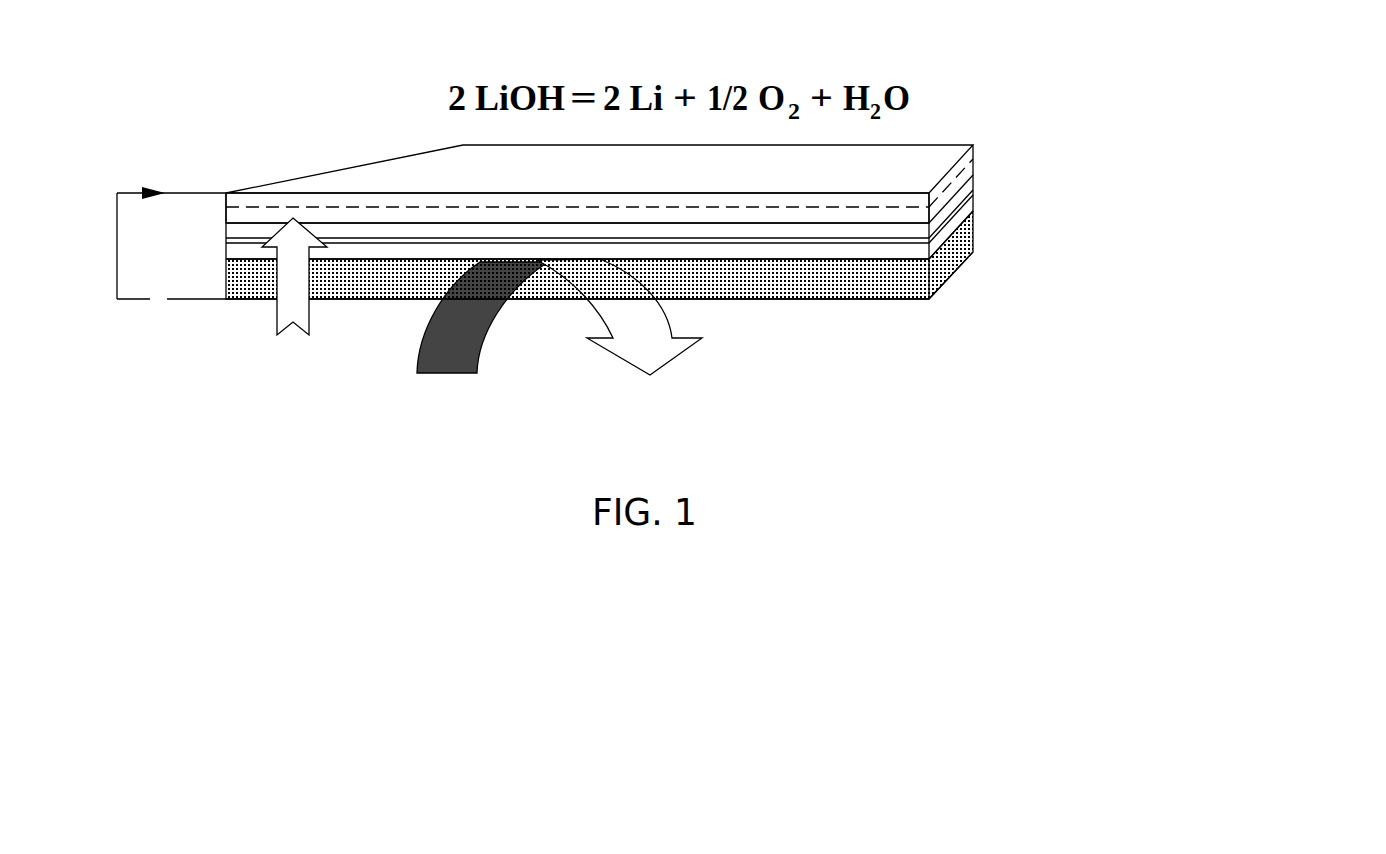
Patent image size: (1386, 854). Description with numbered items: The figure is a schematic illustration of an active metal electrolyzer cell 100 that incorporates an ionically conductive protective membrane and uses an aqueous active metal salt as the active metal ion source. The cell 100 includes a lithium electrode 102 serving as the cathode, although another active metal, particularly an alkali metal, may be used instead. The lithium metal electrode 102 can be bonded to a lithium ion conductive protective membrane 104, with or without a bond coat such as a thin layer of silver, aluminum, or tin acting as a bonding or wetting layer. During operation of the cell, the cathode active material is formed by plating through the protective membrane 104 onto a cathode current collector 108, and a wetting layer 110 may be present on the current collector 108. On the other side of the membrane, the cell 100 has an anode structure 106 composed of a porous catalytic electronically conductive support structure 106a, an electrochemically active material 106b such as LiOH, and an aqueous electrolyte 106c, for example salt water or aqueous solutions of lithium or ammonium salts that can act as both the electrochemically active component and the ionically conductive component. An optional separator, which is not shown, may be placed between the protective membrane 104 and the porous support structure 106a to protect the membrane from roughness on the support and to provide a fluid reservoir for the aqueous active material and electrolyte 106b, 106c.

The cell 100 is at (748, 250).
The lithium electrode 102 is at (972, 192).
The lithium ion conductive protective membrane 104 is at (972, 203).
The anode structure 106 is at (741, 329).
The porous catalytic electronically conductive support structure 106a is at (932, 276).
The electrochemically active material 106b is at (475, 355).
The aqueous electrolyte 106c is at (563, 343).
The cathode current collector 108 is at (240, 194).
The wetting layer 110 is at (227, 213).